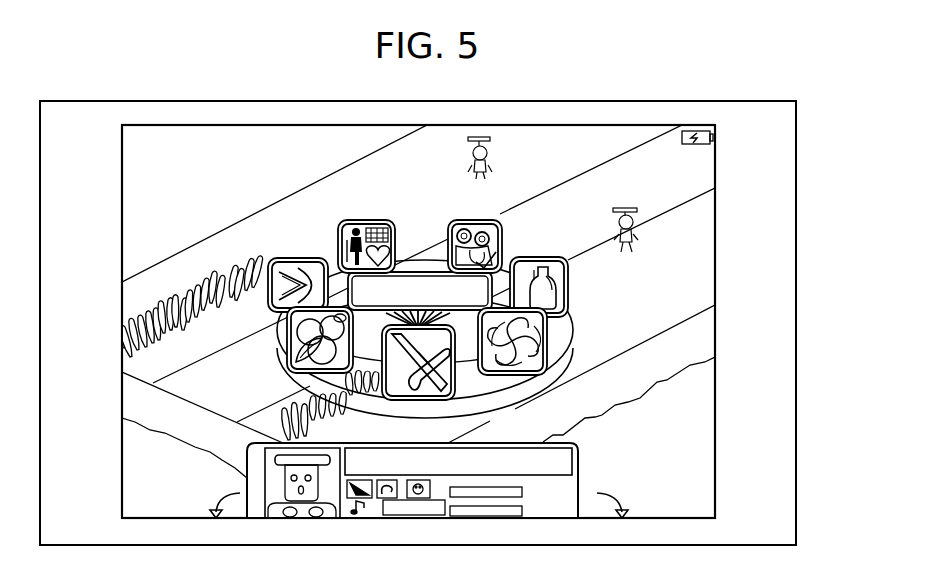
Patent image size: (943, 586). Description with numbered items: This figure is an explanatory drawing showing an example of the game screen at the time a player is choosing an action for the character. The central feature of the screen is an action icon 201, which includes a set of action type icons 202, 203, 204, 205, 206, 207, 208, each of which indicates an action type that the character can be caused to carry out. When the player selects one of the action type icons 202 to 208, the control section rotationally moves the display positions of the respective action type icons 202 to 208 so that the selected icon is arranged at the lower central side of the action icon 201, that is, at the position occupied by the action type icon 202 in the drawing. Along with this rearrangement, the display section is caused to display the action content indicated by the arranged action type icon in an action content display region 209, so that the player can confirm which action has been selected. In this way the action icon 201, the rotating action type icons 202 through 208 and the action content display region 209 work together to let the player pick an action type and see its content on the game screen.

The action icon 201 is at (540, 392).
The action type icon 202 is at (458, 389).
The action type icon 203 is at (284, 362).
The action type icon 204 is at (300, 258).
The action type icon 205 is at (375, 220).
The action type icon 206 is at (478, 220).
The action type icon 207 is at (540, 257).
The action type icon 208 is at (560, 356).
The action content display region 209 is at (414, 266).